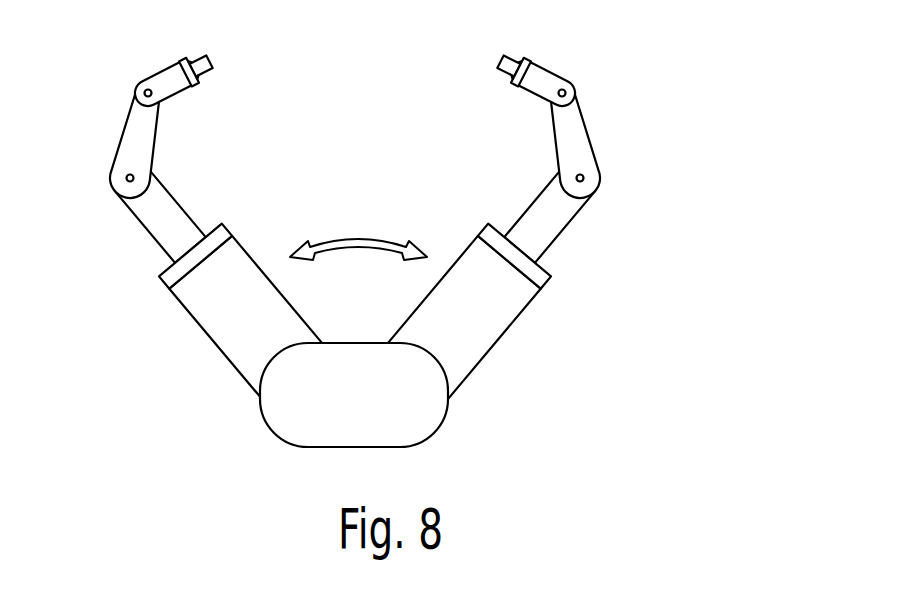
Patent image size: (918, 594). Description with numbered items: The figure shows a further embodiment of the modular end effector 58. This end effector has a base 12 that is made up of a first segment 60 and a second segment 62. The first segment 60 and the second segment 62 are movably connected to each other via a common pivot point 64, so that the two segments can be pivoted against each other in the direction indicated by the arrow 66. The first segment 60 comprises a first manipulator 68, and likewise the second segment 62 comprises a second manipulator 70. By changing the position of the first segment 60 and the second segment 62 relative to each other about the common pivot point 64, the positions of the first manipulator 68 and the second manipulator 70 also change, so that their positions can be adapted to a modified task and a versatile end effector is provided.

The base 12 is at (533, 373).
The modular end effector 58 is at (698, 198).
The first segment 60 is at (510, 288).
The second segment 62 is at (233, 322).
The common pivot point 64 is at (297, 418).
The arrow 66 is at (368, 243).
The first manipulator 68 is at (572, 145).
The second manipulator 70 is at (143, 148).